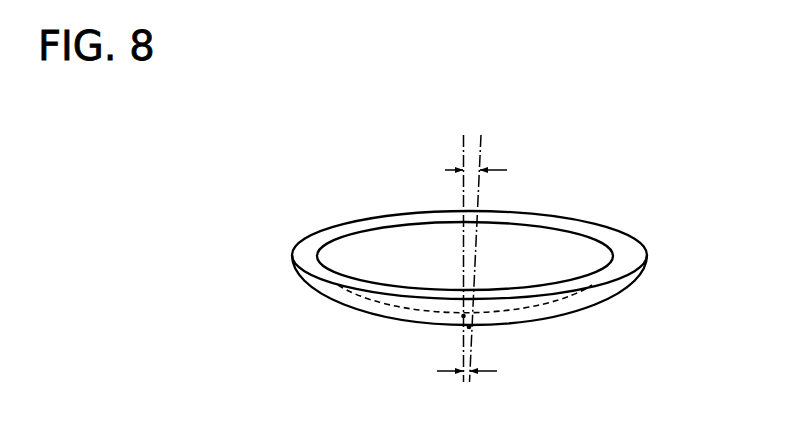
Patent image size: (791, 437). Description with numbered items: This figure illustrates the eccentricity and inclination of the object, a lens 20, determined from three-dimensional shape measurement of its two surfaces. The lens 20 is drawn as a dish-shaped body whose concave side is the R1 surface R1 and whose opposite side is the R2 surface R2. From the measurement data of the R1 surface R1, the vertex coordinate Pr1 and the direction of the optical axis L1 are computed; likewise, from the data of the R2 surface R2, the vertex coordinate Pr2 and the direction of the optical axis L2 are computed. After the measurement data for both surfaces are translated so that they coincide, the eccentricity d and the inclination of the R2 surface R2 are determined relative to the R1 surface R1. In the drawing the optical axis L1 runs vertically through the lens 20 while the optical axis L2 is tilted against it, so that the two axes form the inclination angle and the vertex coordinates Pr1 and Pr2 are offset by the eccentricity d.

The lens 20 is at (589, 206).
The R1 surface R1 is at (392, 258).
The R2 surface R2 is at (560, 314).
The optical axis of the R1 surface side L1 is at (463, 141).
The optical axis of the R2 surface side L2 is at (481, 141).
The eccentricity d is at (457, 370).
The vertex coordinate of the R1 surface side Pr1 is at (460, 326).
The vertex coordinate of the R2 surface side Pr2 is at (470, 332).